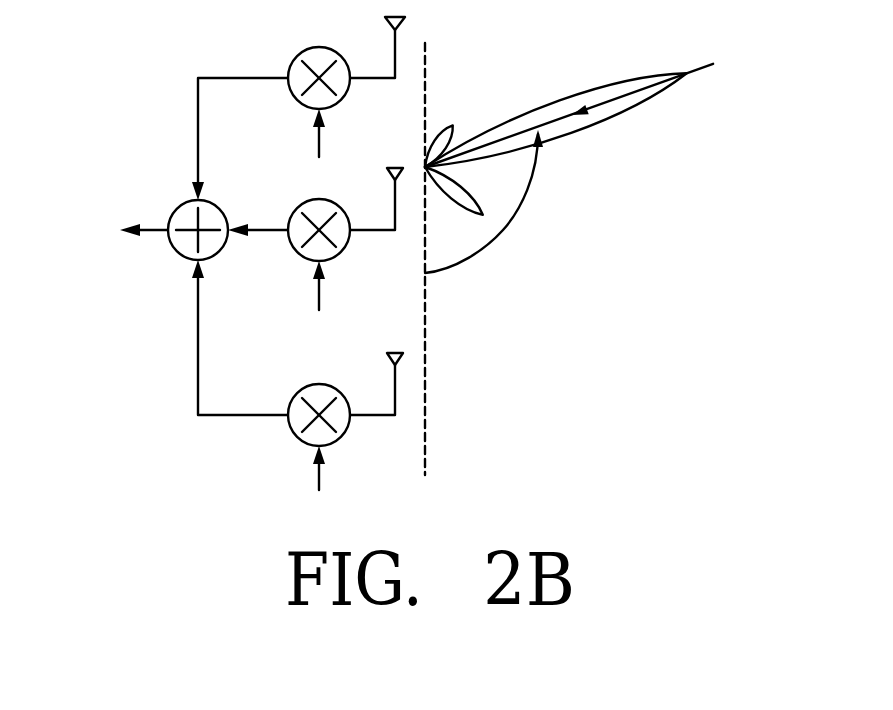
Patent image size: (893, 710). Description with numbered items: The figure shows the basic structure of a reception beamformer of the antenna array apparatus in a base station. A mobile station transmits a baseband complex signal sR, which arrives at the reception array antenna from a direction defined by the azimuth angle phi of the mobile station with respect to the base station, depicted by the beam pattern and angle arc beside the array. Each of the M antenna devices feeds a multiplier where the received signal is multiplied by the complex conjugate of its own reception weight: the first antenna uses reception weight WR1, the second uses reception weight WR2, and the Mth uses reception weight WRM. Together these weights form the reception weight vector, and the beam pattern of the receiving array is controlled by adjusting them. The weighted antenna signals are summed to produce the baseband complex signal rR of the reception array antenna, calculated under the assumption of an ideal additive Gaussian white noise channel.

The baseband complex signal r_R(t) rR is at (138, 230).
The reception weight w_R1 WR1 is at (331, 106).
The reception weight w_R2 WR2 is at (331, 259).
The reception weight w_RM WRM is at (333, 444).
The baseband complex signal s_R(t) sR is at (598, 129).
The azimuth angle phi is at (495, 201).